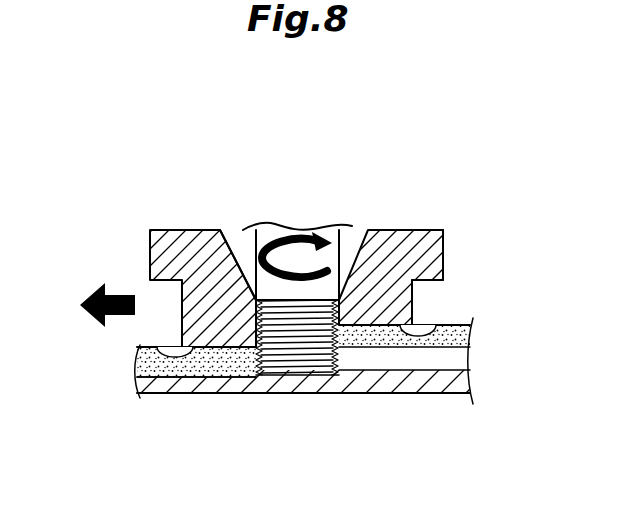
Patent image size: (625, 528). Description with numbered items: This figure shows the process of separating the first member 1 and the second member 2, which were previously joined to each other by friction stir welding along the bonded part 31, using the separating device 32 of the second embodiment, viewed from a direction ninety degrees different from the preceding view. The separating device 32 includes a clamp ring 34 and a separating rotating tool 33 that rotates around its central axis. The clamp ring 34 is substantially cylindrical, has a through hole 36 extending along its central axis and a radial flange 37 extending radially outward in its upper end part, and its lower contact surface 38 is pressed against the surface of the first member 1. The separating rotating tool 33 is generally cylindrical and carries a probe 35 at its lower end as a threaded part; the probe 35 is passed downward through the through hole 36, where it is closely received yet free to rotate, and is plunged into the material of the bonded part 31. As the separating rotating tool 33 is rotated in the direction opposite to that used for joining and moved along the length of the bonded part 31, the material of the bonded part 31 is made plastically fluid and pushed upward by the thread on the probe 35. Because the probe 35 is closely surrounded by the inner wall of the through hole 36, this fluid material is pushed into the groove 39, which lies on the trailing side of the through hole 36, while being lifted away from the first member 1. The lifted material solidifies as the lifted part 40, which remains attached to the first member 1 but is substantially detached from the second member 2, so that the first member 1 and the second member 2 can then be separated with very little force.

The first member 1 is at (455, 358).
The second member 2 is at (458, 385).
The bonded part 31 is at (143, 366).
The separating device 32 is at (186, 176).
The separating rotating tool 33 is at (336, 212).
The clamp ring 34 is at (421, 220).
The probe 35 is at (293, 352).
The through hole 36 is at (238, 240).
The radial flange 37 is at (432, 252).
The contact surface 38 is at (158, 347).
The groove 39 is at (437, 325).
The lifted part 40 is at (455, 338).